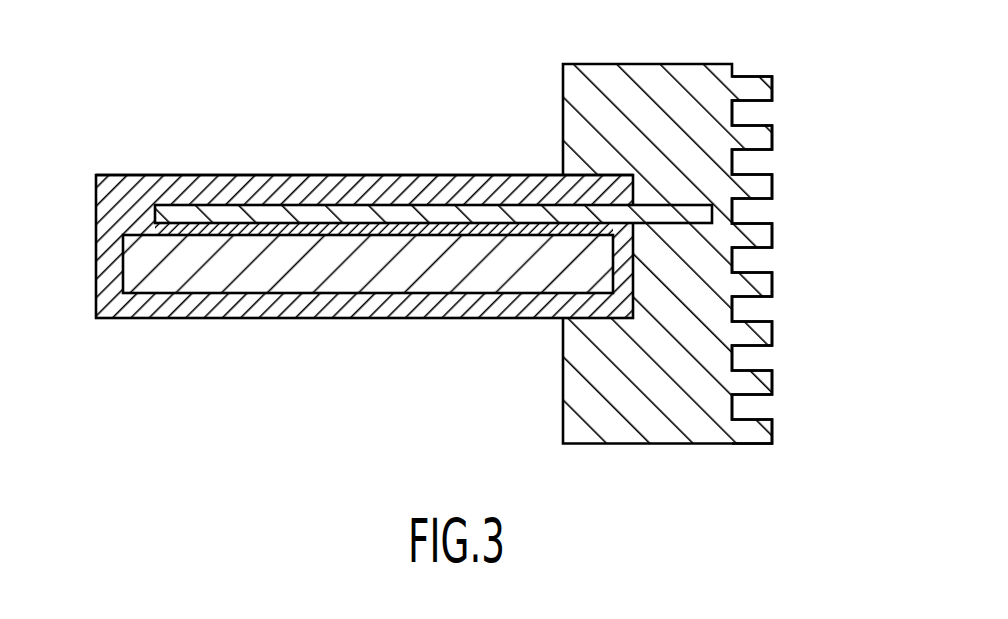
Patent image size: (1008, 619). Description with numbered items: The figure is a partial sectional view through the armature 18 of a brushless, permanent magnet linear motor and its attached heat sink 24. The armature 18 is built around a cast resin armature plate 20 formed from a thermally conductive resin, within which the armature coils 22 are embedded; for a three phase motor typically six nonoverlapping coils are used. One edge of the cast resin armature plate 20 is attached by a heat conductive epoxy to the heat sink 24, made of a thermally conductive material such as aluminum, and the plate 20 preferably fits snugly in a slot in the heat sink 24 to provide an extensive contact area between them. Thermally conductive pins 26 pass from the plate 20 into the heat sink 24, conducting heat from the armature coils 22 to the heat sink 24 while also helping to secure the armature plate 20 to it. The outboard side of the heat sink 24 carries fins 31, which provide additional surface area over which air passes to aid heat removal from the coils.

The armature 18 is at (122, 160).
The cast resin armature plate 20 is at (343, 177).
The armature coils 22 is at (313, 278).
The heat sink 24 is at (638, 75).
The thermally conductive pins 26 is at (218, 210).
The fins 31 is at (763, 138).